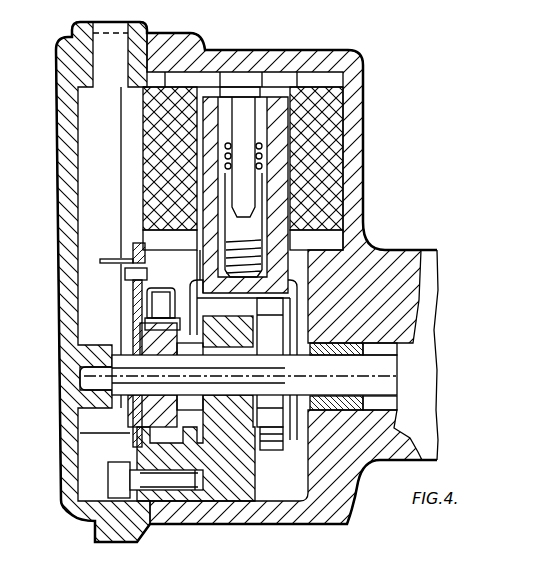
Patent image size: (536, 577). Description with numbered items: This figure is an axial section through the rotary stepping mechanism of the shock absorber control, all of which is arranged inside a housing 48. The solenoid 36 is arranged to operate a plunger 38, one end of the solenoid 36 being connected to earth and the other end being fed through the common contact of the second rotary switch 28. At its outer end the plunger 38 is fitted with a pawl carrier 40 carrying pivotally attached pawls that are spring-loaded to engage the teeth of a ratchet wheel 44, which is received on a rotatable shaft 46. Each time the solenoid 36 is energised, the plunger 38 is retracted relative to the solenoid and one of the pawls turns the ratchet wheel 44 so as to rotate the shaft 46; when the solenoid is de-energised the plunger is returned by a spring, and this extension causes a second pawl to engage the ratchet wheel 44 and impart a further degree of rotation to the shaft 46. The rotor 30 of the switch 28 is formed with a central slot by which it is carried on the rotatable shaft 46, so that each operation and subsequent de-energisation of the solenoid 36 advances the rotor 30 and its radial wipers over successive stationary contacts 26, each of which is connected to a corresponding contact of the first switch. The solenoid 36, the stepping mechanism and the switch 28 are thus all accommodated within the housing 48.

The stationary contact 26 is at (112, 258).
The second rotary switch 28 is at (140, 240).
The rotor 30 is at (121, 333).
The solenoid 36 is at (143, 165).
The plunger 38 is at (272, 227).
The pawl carrier 40 is at (290, 298).
The ratchet wheel 44 is at (277, 440).
The rotatable shaft 46 is at (383, 368).
The housing 48 is at (72, 478).